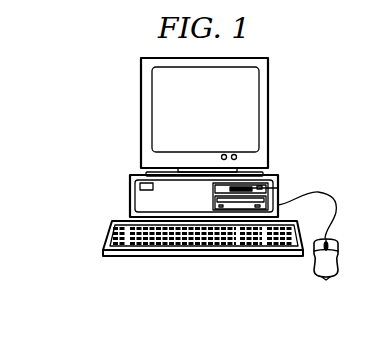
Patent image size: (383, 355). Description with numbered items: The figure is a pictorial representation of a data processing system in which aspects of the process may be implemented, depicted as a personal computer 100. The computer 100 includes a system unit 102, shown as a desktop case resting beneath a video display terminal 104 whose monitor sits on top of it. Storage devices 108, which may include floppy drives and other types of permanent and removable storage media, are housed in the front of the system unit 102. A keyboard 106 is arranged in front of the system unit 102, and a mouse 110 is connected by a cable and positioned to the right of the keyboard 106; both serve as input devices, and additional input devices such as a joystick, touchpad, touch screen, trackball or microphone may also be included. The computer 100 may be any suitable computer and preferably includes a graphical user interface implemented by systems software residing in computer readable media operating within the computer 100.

The computer 100 is at (84, 100).
The system unit 102 is at (130, 193).
The video display terminal 104 is at (268, 112).
The keyboard 106 is at (125, 254).
The storage devices 108 is at (276, 192).
The mouse 110 is at (325, 278).